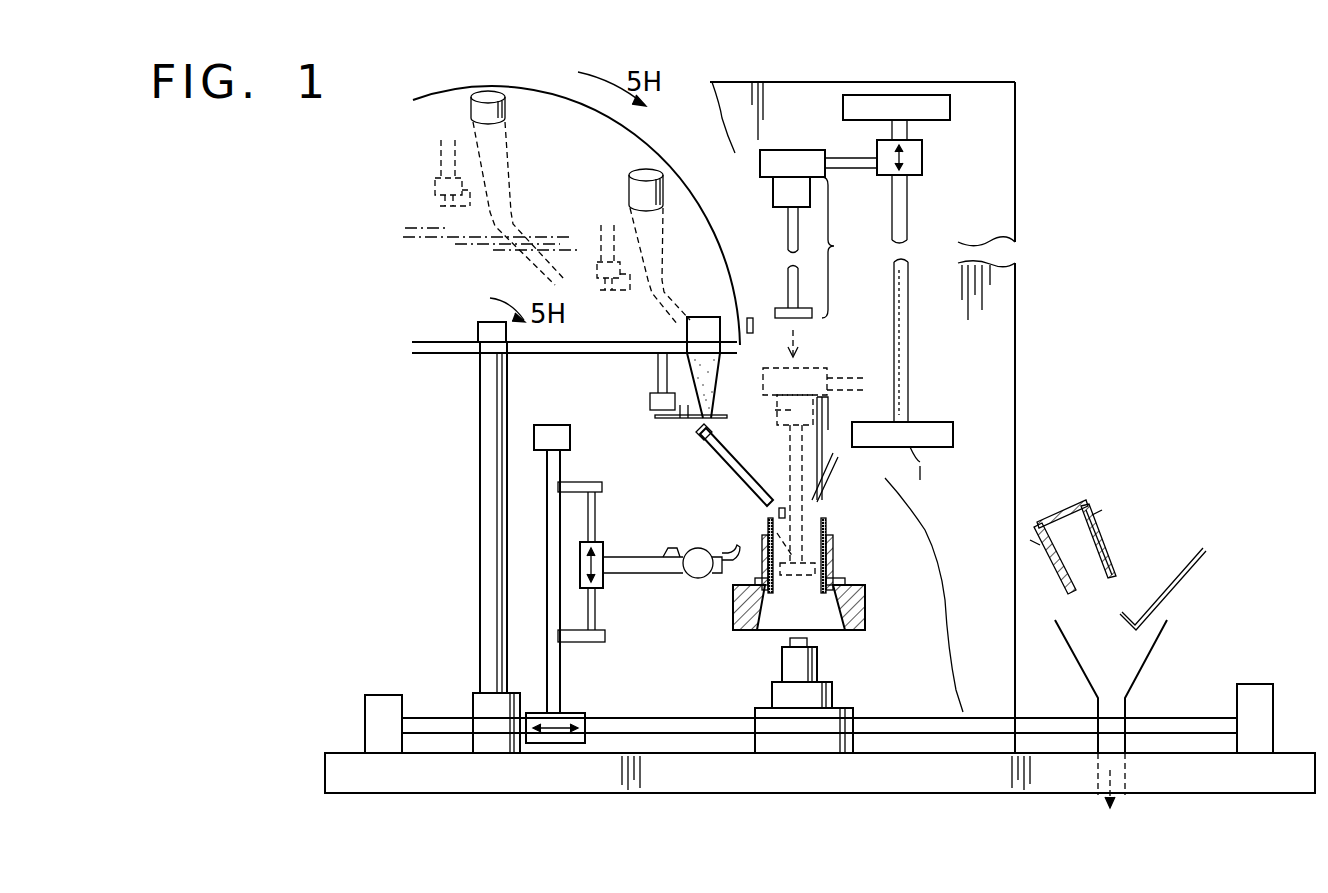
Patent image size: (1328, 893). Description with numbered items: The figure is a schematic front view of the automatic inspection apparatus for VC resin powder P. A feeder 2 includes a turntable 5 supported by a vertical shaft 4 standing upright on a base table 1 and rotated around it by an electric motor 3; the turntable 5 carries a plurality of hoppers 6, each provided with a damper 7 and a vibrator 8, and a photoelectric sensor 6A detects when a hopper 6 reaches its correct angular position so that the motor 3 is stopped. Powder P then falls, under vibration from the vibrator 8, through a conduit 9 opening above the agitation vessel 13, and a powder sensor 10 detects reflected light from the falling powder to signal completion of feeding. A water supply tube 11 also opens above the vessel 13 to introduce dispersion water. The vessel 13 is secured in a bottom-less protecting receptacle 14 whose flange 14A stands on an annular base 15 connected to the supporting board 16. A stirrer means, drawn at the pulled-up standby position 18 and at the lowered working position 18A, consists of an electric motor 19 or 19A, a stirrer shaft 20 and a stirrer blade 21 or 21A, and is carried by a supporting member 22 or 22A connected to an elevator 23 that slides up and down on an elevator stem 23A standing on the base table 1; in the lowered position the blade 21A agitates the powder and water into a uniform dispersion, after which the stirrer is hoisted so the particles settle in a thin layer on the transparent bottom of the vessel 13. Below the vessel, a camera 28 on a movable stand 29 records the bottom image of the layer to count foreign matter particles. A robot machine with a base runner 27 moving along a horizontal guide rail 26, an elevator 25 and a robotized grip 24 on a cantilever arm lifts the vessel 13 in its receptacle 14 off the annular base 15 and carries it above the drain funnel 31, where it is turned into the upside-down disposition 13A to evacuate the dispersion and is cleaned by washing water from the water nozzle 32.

The base table 1 is at (348, 778).
The feeder 2 is at (460, 410).
The electric motor 3 is at (485, 716).
The vertical shaft 4 is at (480, 535).
The turntable 5 is at (438, 348).
The hopper 6 is at (472, 107).
The photoelectric sensor 6A is at (750, 334).
The damper 7 is at (682, 420).
The vibrator 8 is at (698, 438).
The conduit 9 is at (722, 455).
The powder sensor 10 is at (778, 513).
The water supply tube 11 is at (830, 478).
The agitation vessel 13 is at (833, 527).
The upside-down disposition 13A is at (1110, 560).
The protecting receptacle 14 is at (833, 560).
The flange 14A is at (845, 582).
The annular base 15 is at (735, 622).
The supporting board 16 is at (995, 130).
The stirrer means 18 is at (846, 247).
The stirrer means 18A is at (822, 445).
The electric motor 19 is at (775, 192).
The electric motor 19A is at (780, 412).
The stirrer shaft 20 is at (788, 235).
The stirrer blade 21 is at (810, 318).
The stirrer blade 21A is at (765, 528).
The supporting member 22 is at (783, 165).
The supporting member 22A is at (815, 370).
The elevator 23 is at (918, 166).
The elevator stem 23A is at (910, 352).
The robotized grip 24 is at (694, 570).
The elevator 25 is at (600, 586).
The horizontal guide rail 26 is at (598, 726).
The base runner 27 is at (585, 713).
The camera 28 is at (818, 666).
The movable stand 29 is at (833, 695).
The drain funnel 31 is at (1160, 642).
The water nozzle 32 is at (1195, 565).
The VC resin powder P is at (715, 398).